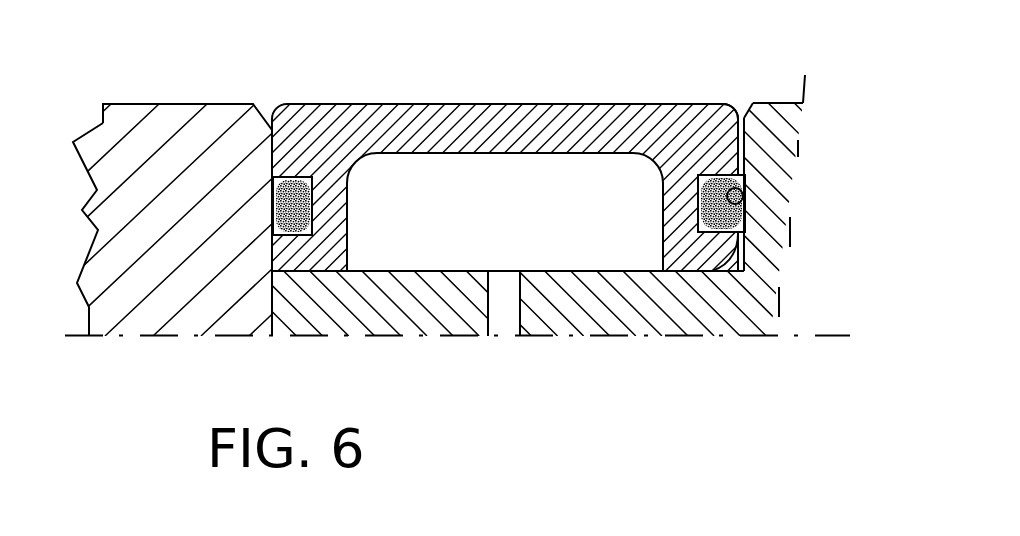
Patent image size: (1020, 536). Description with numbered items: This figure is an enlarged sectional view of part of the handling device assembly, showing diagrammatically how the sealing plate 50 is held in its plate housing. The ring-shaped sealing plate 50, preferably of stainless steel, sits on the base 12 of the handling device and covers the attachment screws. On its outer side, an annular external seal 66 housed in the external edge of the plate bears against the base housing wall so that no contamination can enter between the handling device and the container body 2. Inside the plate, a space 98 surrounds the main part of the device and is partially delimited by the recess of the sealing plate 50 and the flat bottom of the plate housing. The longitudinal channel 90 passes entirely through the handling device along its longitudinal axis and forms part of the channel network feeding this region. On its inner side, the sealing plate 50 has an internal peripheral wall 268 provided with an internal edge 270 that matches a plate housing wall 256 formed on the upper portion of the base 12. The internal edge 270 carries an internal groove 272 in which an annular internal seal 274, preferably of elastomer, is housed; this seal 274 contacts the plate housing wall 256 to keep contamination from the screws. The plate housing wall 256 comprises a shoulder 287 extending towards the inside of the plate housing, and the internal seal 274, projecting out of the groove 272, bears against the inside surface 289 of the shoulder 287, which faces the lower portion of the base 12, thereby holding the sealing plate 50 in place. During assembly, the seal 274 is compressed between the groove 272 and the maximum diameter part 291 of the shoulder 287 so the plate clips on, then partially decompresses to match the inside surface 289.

The container body 2 is at (128, 132).
The annular external seal 66 is at (290, 198).
The sealing plate 50 is at (383, 122).
The space 98 is at (450, 172).
The plate housing wall 256 is at (726, 142).
The maximum diameter part of the shoulder 291 is at (737, 130).
The internal peripheral wall 268 is at (734, 97).
The shoulder 287 is at (800, 118).
The inside surface of the shoulder 289 is at (740, 193).
The annular internal seal 274 is at (748, 226).
The internal groove 272 is at (748, 262).
The internal edge 270 is at (740, 160).
The longitudinal channel 90 is at (504, 322).
The base 12 is at (727, 313).